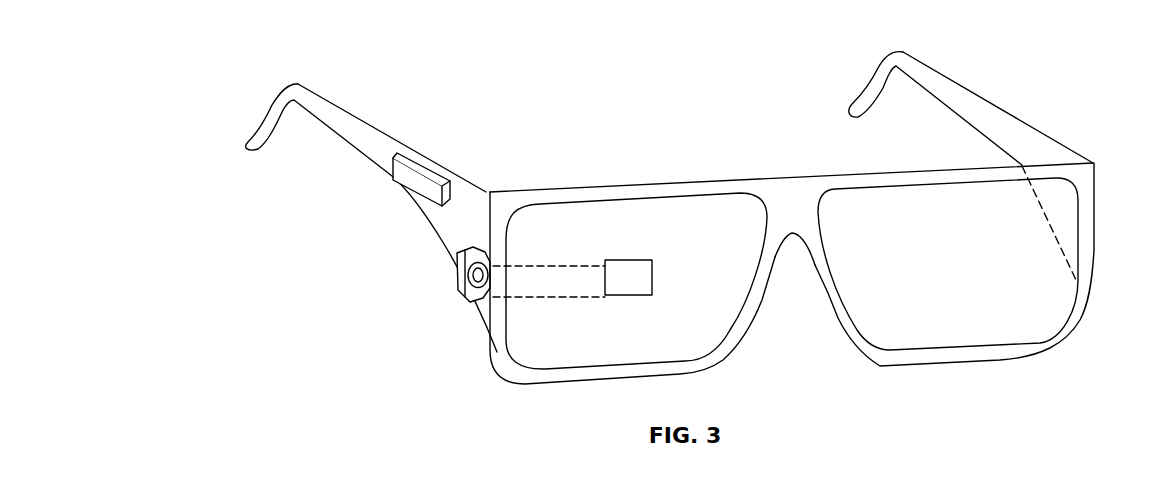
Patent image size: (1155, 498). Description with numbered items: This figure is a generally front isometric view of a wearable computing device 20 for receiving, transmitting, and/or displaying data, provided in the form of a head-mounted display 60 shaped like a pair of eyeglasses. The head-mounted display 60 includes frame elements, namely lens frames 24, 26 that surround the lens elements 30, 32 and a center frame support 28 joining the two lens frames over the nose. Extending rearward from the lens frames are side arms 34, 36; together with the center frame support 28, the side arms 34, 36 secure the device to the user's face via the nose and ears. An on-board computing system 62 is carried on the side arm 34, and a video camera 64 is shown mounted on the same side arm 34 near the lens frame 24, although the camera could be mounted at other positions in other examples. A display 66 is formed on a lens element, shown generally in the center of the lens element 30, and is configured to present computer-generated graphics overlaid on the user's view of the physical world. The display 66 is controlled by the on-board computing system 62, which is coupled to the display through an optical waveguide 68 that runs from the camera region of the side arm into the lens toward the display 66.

The wearable computing device 20 is at (1052, 91).
The lens frame 24 is at (570, 188).
The lens frame 26 is at (873, 173).
The center frame support 28 is at (793, 195).
The lens element 30 is at (597, 358).
The lens element 32 is at (950, 337).
The side arm 34 is at (387, 142).
The side arm 36 is at (958, 95).
The head-mounted display 60 is at (663, 180).
The on-board computing system 62 is at (410, 177).
The video camera 64 is at (458, 278).
The display 66 is at (623, 295).
The optical waveguide 68 is at (538, 298).